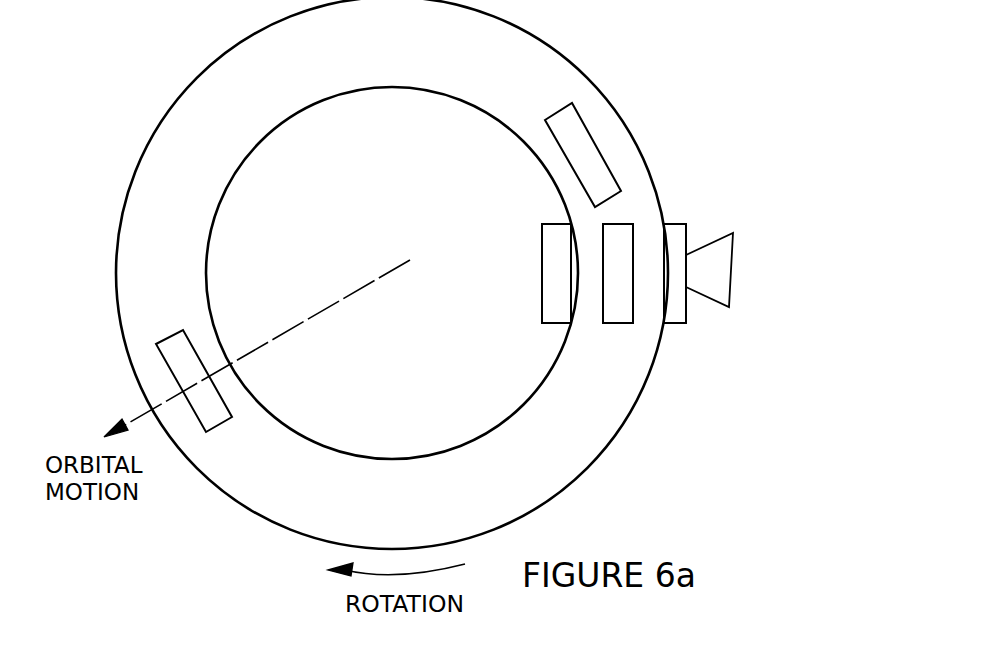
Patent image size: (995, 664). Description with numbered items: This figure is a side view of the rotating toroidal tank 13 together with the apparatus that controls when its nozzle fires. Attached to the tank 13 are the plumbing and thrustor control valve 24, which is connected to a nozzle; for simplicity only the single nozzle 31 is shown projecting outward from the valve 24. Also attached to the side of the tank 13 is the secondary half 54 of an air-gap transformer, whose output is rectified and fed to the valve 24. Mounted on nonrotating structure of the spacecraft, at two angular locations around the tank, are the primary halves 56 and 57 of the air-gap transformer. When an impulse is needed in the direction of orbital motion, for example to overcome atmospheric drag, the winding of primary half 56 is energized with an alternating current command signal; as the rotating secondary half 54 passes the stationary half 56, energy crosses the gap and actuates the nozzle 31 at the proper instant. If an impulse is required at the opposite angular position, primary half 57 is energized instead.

The rotating toroidal tank 13 is at (573, 482).
The thrustor control valve 24 is at (680, 313).
The nozzle 31 is at (723, 250).
The secondary half of airgap transformer 54 is at (622, 310).
The primary half of air-gap transformer 56 is at (173, 358).
The primary half of air-gap transformer 57 is at (583, 142).